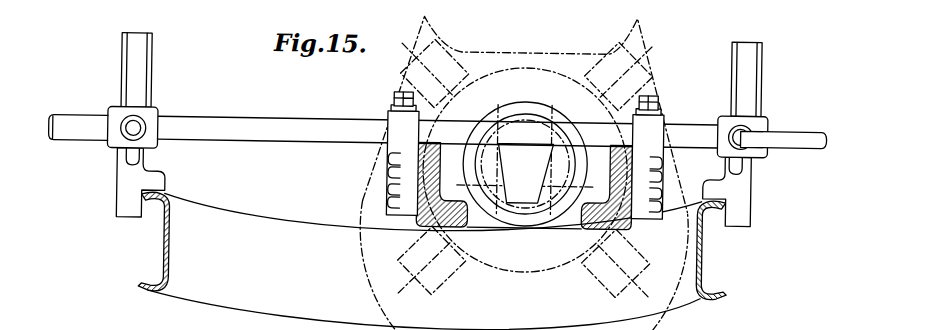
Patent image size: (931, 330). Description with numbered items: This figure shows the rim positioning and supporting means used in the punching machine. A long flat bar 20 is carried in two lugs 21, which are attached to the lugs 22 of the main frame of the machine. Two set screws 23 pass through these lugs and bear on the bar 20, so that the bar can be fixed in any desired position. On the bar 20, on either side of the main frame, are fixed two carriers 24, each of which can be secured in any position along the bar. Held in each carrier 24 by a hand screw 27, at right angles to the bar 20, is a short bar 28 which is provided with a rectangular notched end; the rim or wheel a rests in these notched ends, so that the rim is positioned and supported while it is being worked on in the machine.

The long flat bar 20 is at (703, 128).
The lugs 21 is at (412, 214).
The lugs of the main frame 22 is at (497, 229).
The set screws 23 is at (397, 95).
The carriers 24 is at (153, 119).
The hand screw 27 is at (80, 127).
The short bar 28 is at (118, 201).
The rim or wheel a is at (256, 205).